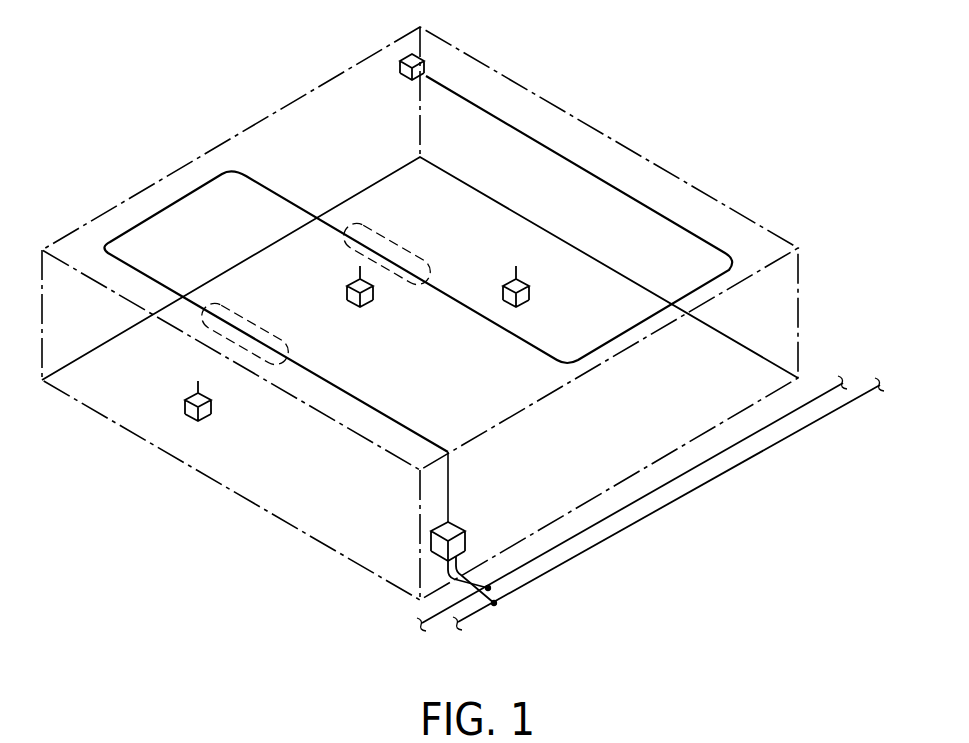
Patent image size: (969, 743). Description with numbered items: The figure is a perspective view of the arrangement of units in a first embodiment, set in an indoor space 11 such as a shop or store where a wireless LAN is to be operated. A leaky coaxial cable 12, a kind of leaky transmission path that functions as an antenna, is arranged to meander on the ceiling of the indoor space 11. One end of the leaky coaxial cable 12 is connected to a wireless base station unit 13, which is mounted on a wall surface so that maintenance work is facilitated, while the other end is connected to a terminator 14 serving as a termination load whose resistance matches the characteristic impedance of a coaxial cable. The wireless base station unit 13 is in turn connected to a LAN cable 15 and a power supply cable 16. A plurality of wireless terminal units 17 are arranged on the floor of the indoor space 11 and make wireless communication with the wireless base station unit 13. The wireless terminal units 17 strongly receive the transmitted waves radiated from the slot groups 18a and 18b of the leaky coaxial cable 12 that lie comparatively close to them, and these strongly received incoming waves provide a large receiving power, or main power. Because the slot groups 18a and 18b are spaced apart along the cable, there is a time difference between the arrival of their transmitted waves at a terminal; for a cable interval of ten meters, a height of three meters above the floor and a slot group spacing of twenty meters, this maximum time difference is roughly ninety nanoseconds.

The indoor space 11 is at (306, 93).
The leaky coaxial cable 12 is at (167, 200).
The wireless base station unit 13 is at (469, 533).
The terminator 14 is at (423, 60).
The LAN cable 15 is at (655, 512).
The power supply cable 16 is at (712, 458).
The wireless terminal unit 17 is at (211, 404).
The slot group 18a is at (258, 324).
The slot group 18b is at (399, 243).